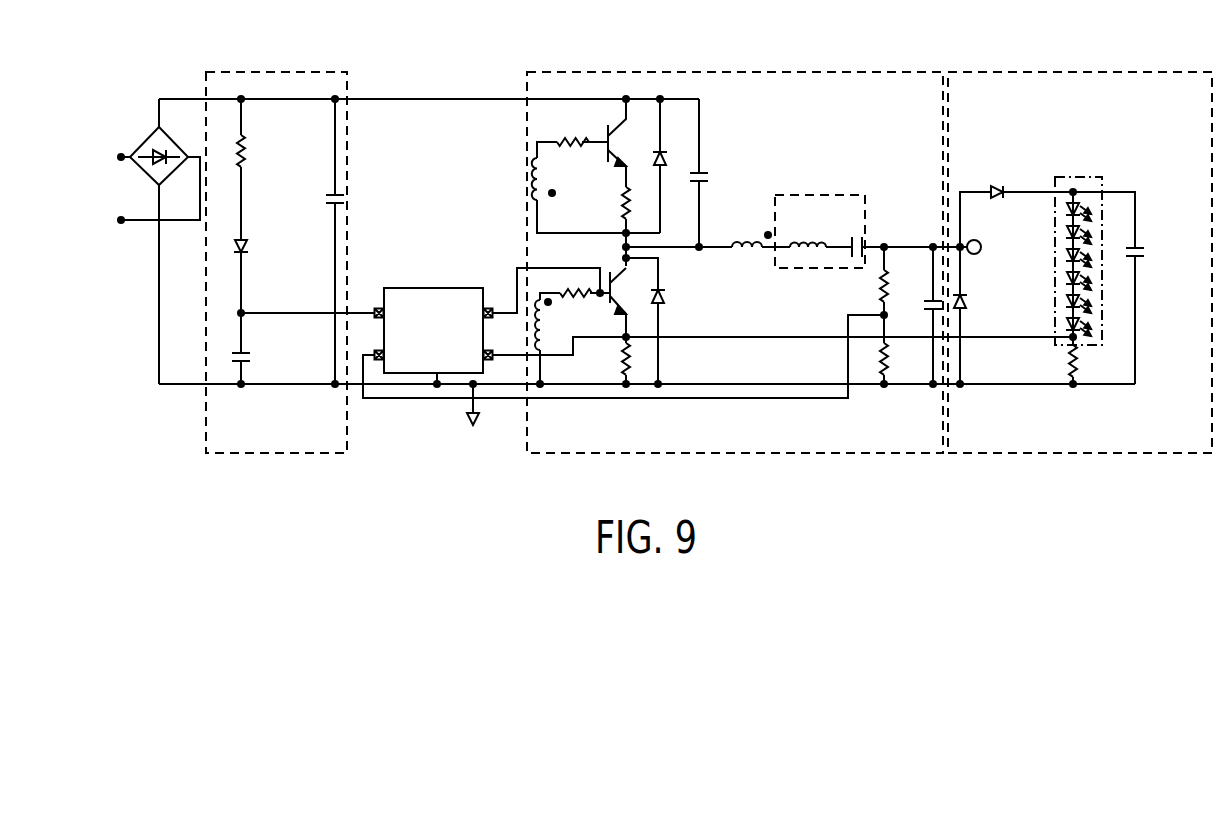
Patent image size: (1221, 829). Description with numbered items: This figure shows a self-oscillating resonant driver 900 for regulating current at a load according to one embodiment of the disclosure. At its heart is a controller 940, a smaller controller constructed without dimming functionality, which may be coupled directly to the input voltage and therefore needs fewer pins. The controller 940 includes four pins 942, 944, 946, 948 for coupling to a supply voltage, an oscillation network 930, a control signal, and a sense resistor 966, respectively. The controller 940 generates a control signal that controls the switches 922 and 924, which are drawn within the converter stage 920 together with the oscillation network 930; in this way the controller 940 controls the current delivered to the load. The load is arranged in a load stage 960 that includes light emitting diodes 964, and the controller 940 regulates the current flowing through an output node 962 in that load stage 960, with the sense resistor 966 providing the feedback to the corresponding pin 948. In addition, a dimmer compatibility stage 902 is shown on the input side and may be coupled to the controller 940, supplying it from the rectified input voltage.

The LED driver circuit 900 is at (113, 101).
The dimmer compatibility stage 902 is at (286, 72).
The resonant converter stage 920 is at (763, 72).
The switch 922 is at (604, 142).
The switch 924 is at (614, 296).
The oscillation network 930 is at (800, 193).
The controller 940 is at (458, 374).
The pin 942 is at (382, 308).
The pin 944 is at (378, 362).
The pin 946 is at (492, 308).
The pin 948 is at (488, 362).
The load stage 960 is at (1020, 72).
The output node 962 is at (981, 253).
The light emitting diodes 964 is at (1083, 176).
The sense resistor 966 is at (1080, 356).